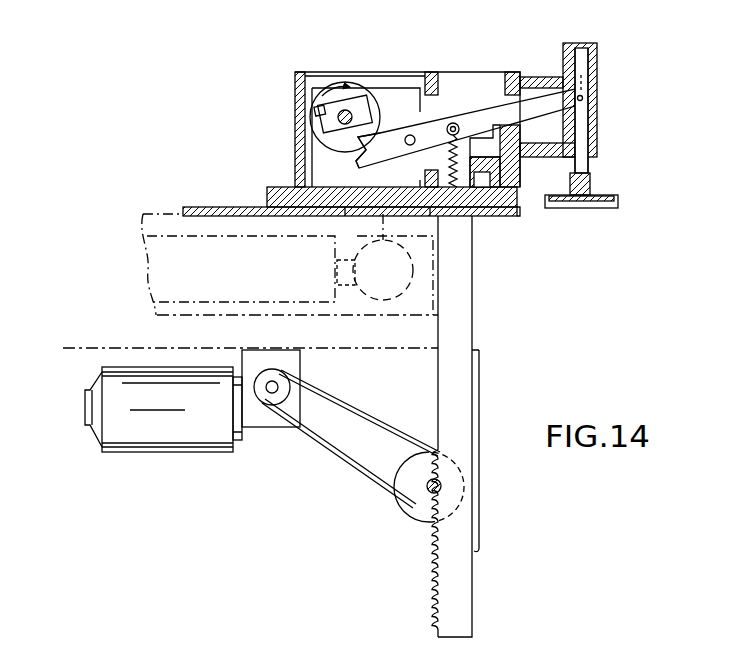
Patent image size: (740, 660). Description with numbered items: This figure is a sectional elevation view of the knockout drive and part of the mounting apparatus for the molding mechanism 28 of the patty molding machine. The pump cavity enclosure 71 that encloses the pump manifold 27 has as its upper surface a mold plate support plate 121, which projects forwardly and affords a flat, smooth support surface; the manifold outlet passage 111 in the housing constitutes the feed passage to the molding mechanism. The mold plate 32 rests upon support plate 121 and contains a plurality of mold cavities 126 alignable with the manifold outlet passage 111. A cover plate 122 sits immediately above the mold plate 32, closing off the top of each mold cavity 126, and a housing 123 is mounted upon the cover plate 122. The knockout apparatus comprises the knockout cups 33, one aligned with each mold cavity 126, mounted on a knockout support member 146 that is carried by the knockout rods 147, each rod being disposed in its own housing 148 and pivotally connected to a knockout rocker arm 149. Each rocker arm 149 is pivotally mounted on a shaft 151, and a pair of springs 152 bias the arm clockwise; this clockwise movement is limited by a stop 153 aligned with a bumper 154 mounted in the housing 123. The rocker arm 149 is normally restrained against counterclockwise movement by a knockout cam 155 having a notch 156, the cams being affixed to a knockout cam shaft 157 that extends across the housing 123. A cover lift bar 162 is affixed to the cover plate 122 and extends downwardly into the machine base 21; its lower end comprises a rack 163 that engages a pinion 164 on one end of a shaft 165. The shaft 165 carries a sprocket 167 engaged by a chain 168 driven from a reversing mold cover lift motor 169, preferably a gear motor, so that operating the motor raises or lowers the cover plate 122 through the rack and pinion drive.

The machine base 21 is at (155, 348).
The pump manifold 27 is at (423, 289).
The molding mechanism 28 is at (455, 59).
The mold plate 32 is at (228, 207).
The knockout cups 33 is at (607, 200).
The pump cavity enclosure 71 is at (255, 318).
The manifold outlet passage 111 is at (363, 229).
The mold plate support plate 121 is at (521, 222).
The cover plate 122 is at (283, 186).
The housing 123 is at (294, 100).
The mold cavities 126 is at (410, 210).
The knockout support member 146 is at (591, 175).
The knockout rod 147 is at (583, 121).
The knockout rod housing 148 is at (598, 52).
The knockout rocker arm 149 is at (535, 107).
The shaft 151 is at (410, 134).
The springs 152 is at (454, 123).
The stop 153 is at (489, 154).
The bumper 154 is at (485, 184).
The knockout cam 155 is at (349, 82).
The notch 156 is at (367, 149).
The knockout cam shaft 157 is at (357, 100).
The cover lift bar 162 is at (466, 328).
The rack 163 is at (440, 607).
The pinion 164 is at (428, 505).
The shaft 165 is at (428, 481).
The sprocket 167 is at (410, 490).
The chain 168 is at (367, 413).
The mold cover lift motor 169 is at (161, 436).